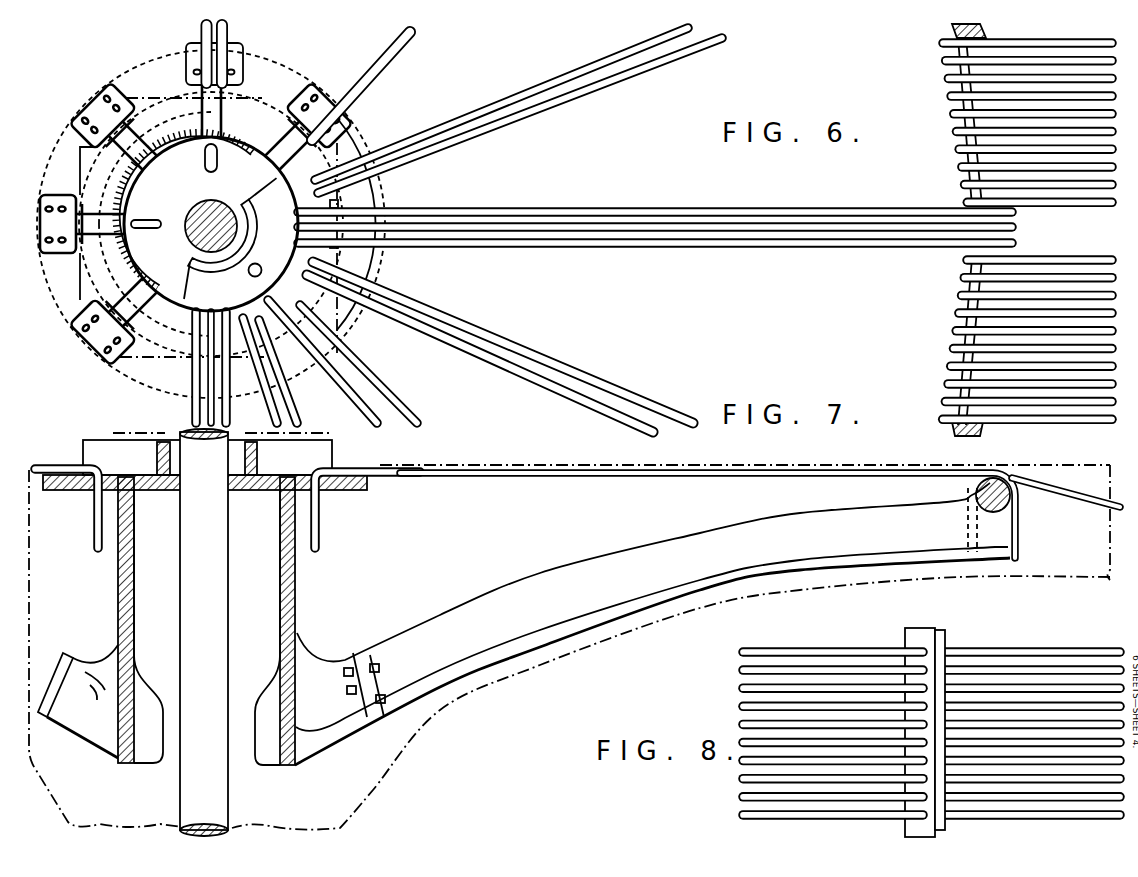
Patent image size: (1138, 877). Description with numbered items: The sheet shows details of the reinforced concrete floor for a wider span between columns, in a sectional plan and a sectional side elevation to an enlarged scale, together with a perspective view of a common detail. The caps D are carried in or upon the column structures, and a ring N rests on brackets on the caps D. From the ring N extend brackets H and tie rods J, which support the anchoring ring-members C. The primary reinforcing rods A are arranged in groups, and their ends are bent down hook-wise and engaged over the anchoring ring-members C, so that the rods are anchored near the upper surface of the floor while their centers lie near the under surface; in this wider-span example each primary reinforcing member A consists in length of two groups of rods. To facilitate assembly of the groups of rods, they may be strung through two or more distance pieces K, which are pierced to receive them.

In FIG. 6, the bracket H is at (200, 40).
In FIG. 7, the bracket H is at (494, 574).
In FIG. 6, the tie rod J is at (578, 72).
In FIG. 7, the tie rod J is at (60, 464).
In FIG. 6, the ring N is at (345, 150).
In FIG. 7, the ring N is at (60, 498).
In FIG. 6, the cap D is at (207, 221).
In FIG. 7, the cap D is at (148, 594).
In FIG. 6, the anchoring ring-member C is at (945, 58).
In FIG. 7, the anchoring ring-member C is at (1014, 505).
In FIG. 6, the primary reinforcing rod A is at (1062, 186).
In FIG. 7, the primary reinforcing rod A is at (1080, 500).
In FIG. 8, the primary reinforcing rod A is at (931, 731).
In FIG. 8, the distance piece K is at (905, 636).